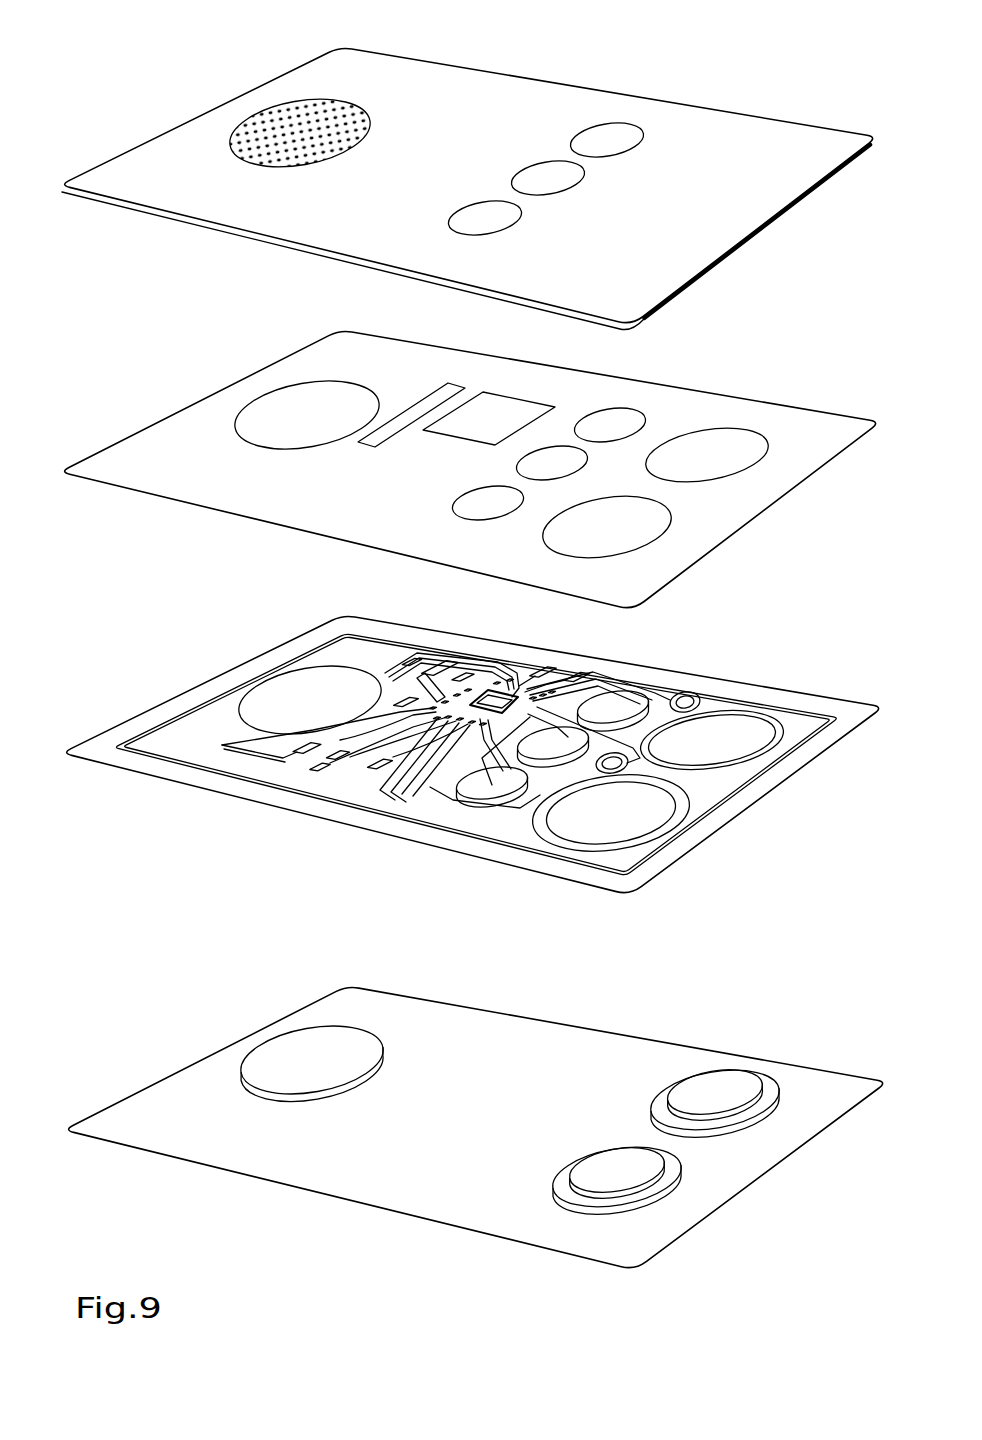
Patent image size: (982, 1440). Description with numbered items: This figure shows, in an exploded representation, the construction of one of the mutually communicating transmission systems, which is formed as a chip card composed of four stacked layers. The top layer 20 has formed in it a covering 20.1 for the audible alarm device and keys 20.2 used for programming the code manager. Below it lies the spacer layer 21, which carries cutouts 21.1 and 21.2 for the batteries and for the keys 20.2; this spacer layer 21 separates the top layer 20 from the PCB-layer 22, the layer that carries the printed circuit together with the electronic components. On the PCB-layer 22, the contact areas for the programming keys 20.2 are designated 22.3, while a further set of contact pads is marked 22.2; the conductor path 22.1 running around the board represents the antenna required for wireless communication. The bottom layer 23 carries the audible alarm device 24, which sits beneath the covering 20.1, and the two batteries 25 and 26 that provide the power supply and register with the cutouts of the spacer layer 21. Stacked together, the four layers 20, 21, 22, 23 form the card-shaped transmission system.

The top layer 20 is at (507, 105).
The covering 20.1 is at (338, 100).
The keys 20.2 is at (605, 125).
The spacer layer 21 is at (198, 462).
The cutout 21.1 is at (728, 427).
The cutout 21.2 is at (622, 408).
The PCB-layer 22 is at (98, 743).
The conductor path 22.1 is at (767, 700).
The contact pads 22.2 is at (330, 758).
The contact areas 22.3 is at (633, 700).
The bottom layer 23 is at (152, 1108).
The audible alarm device 24 is at (300, 1062).
The battery 25 is at (613, 1142).
The battery 26 is at (747, 1080).